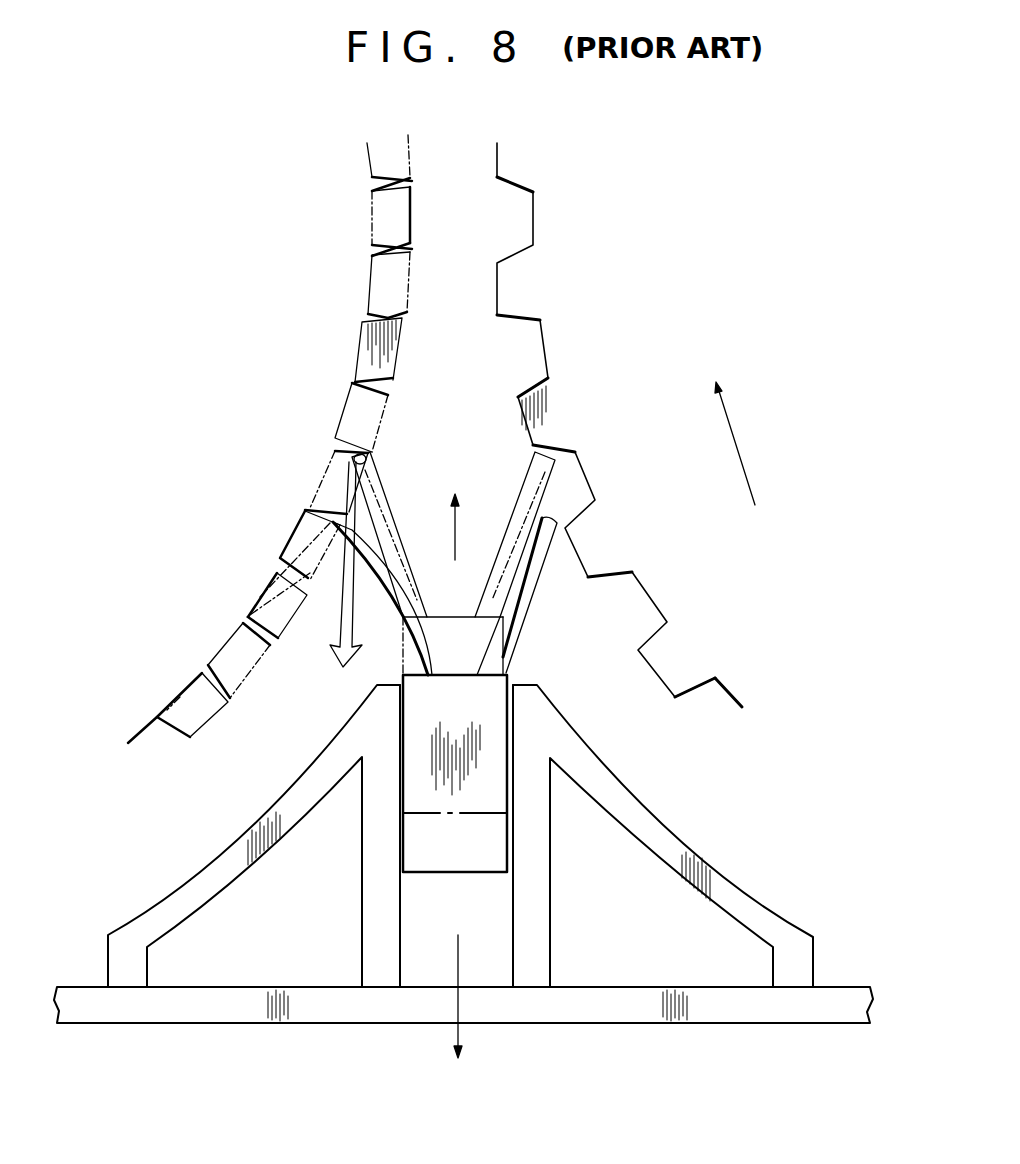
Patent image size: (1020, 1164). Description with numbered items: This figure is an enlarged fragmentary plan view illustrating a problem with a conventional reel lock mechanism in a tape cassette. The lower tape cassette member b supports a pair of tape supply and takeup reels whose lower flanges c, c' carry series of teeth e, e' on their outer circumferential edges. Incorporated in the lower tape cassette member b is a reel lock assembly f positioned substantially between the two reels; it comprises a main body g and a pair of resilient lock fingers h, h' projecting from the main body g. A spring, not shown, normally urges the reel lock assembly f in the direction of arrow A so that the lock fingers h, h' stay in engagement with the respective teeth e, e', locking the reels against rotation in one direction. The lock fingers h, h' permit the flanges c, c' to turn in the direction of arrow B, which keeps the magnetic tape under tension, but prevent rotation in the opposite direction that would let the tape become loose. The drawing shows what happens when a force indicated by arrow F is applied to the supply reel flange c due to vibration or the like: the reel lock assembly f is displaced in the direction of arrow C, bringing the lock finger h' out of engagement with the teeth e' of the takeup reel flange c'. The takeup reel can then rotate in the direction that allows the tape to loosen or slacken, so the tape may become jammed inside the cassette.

The lower tape cassette member b is at (745, 1022).
The lower flange of supply reel c is at (142, 753).
The lower flange of takeup reel c' is at (726, 714).
The teeth e is at (308, 453).
The teeth e' is at (599, 425).
The reel lock assembly f is at (505, 832).
The main body g is at (505, 662).
The lock finger h is at (382, 553).
The lock finger h' is at (550, 557).
The direction of spring urging A is at (454, 545).
The direction of permitted flange rotation B is at (750, 458).
The direction of lock assembly displacement C is at (457, 1014).
The force F is at (348, 579).